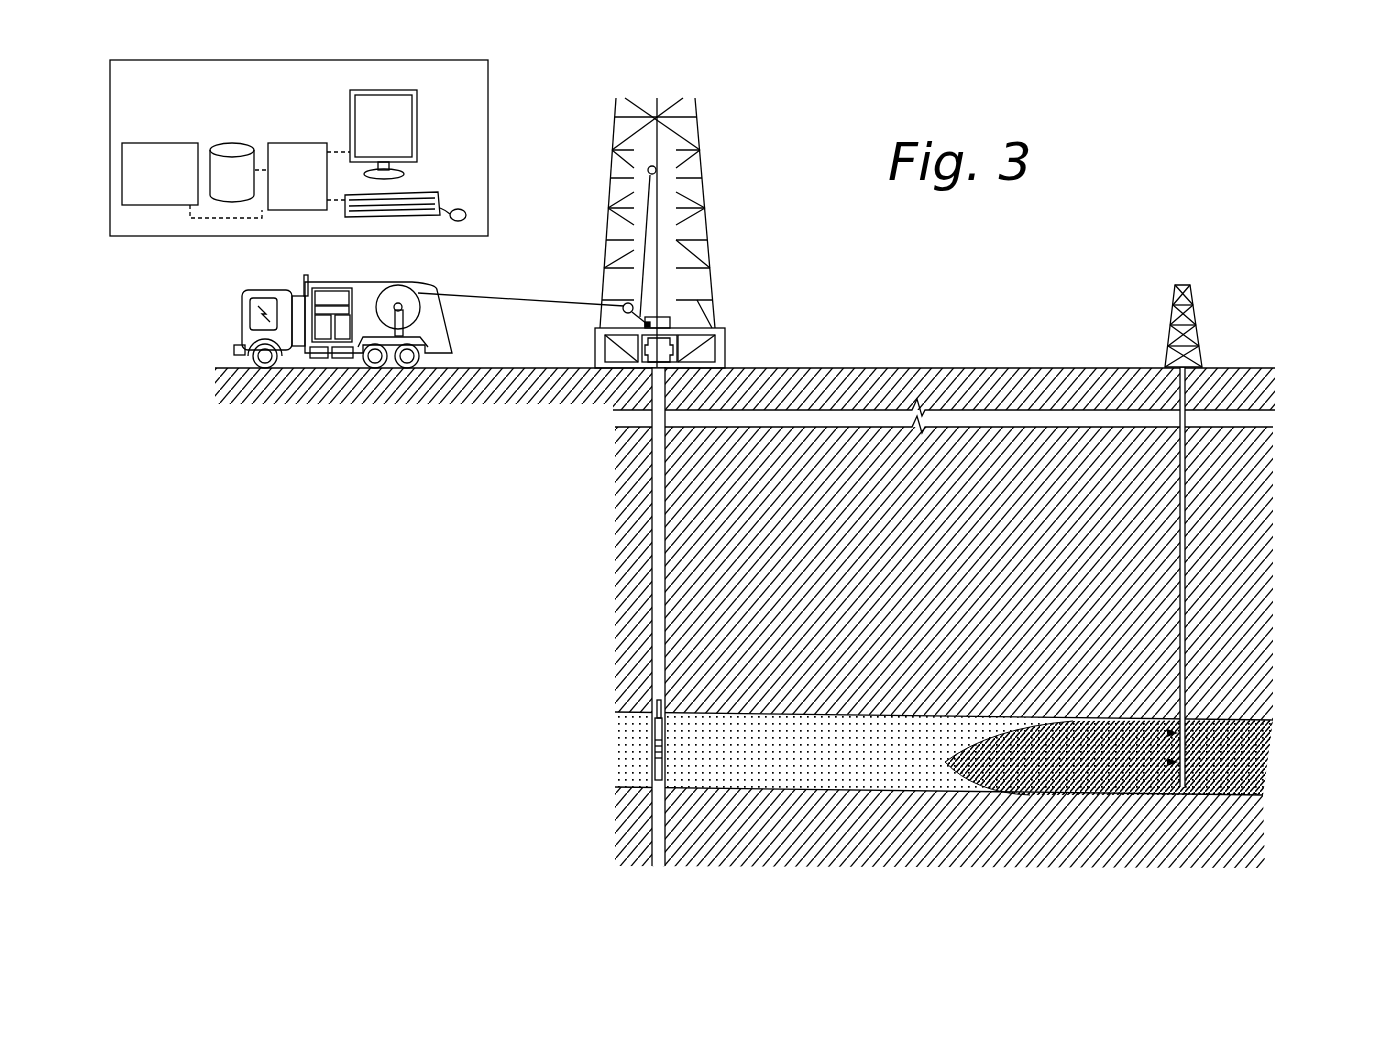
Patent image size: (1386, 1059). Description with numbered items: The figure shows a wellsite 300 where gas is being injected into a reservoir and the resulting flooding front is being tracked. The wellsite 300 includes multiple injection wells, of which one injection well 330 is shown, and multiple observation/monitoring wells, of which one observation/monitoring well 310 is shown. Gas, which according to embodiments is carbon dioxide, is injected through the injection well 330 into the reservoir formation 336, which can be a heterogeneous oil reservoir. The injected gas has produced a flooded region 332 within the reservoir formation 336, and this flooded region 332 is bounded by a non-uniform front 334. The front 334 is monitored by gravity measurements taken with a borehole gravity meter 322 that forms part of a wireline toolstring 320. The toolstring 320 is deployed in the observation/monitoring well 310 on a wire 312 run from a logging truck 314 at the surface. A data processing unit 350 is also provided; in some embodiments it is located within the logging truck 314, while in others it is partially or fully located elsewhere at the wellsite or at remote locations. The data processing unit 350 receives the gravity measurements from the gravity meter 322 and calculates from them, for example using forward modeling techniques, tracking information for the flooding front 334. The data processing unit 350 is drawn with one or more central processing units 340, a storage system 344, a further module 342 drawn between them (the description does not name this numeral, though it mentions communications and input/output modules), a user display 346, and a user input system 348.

The wellsite 300 is at (766, 136).
The observation/monitoring well 310 is at (650, 478).
The wire 312 is at (497, 299).
The logging truck 314 is at (242, 303).
The wireline toolstring 320 is at (652, 775).
The borehole gravity meter 322 is at (652, 748).
The injection well 330 is at (1185, 578).
The flooded region 332 is at (1245, 758).
The non-uniform front 334 is at (957, 775).
The reservoir formation 336 is at (850, 767).
The central processing unit 340 is at (179, 184).
The database 342 is at (251, 189).
The storage system 344 is at (316, 187).
The user display 346 is at (402, 138).
The user input system 348 is at (453, 167).
The data processing unit 350 is at (475, 109).